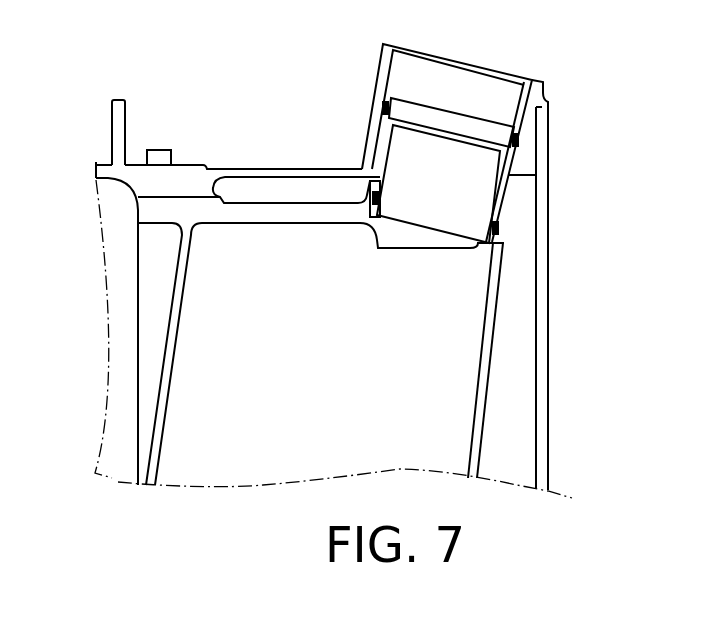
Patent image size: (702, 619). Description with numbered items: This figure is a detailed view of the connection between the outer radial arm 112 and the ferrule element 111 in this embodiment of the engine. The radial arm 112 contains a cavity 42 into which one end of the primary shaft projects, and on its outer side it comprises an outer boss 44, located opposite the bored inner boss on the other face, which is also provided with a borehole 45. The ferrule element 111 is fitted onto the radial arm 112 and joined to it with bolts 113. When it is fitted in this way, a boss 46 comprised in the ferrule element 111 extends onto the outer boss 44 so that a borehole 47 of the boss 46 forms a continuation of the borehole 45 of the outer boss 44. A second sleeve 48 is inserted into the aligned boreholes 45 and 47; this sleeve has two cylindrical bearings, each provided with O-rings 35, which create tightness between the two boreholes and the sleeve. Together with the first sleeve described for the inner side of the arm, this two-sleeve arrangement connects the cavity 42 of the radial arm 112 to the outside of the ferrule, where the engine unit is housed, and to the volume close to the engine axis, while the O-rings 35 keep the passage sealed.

The cavity 42 is at (333, 289).
The ferrule element 111 is at (245, 166).
The outer radial arm 112 is at (277, 203).
The bolts 113 is at (157, 150).
The boss 46 is at (378, 75).
The borehole 47 is at (392, 73).
The second sleeve 48 is at (463, 114).
The borehole 45 is at (390, 247).
The outer boss 44 is at (377, 184).
The O-rings 35 is at (498, 228).